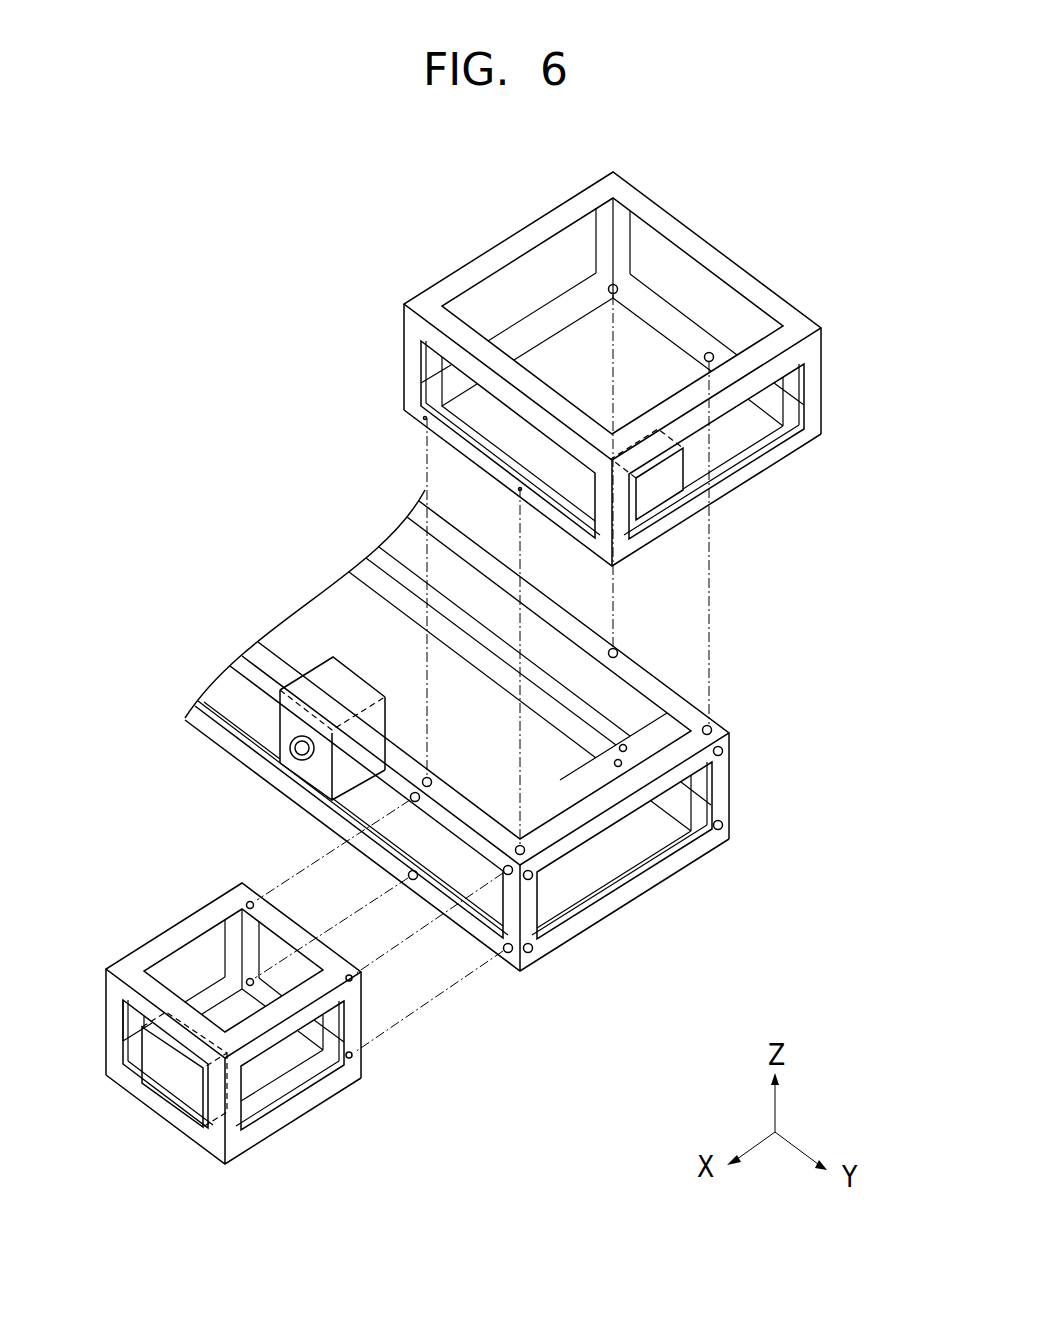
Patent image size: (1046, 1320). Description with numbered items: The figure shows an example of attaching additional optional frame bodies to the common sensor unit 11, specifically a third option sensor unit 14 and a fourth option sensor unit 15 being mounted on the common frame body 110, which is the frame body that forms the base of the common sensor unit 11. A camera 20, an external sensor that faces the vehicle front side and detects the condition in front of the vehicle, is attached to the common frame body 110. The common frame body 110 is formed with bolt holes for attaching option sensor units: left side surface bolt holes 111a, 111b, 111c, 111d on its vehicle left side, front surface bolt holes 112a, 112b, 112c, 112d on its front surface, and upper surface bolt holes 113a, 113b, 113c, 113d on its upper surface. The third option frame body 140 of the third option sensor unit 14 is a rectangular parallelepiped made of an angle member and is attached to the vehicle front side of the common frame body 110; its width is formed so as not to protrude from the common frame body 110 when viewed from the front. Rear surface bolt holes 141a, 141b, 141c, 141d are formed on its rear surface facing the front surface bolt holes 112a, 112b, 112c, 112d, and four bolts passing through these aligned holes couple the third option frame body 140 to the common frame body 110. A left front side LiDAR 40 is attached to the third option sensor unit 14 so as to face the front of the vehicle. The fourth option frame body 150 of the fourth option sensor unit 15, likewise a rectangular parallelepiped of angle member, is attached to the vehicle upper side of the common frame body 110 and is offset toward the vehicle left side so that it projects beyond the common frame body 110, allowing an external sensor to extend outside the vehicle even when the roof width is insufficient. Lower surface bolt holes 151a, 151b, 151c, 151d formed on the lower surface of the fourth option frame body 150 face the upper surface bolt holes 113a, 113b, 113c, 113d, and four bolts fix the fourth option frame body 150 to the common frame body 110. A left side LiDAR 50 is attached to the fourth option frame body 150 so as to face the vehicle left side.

The common sensor unit 11 is at (517, 766).
The third option sensor unit 14 is at (265, 990).
The fourth option sensor unit 15 is at (561, 367).
The camera 20 is at (300, 772).
The left front side LiDAR 40 is at (180, 1088).
The left side LiDAR 50 is at (676, 495).
The common frame body 110 is at (690, 700).
The left side surface bolt hole 111a is at (529, 870).
The left side surface bolt hole 111b is at (529, 953).
The left side surface bolt hole 111c is at (723, 752).
The left side surface bolt hole 111d is at (718, 830).
The front surface bolt hole 112a is at (505, 875).
The front surface bolt hole 112b is at (508, 953).
The front surface bolt hole 112c is at (411, 798).
The front surface bolt hole 112d is at (408, 876).
The upper surface bolt hole 113a is at (518, 845).
The upper surface bolt hole 113b is at (428, 777).
The upper surface bolt hole 113c is at (710, 724).
The upper surface bolt hole 113d is at (615, 648).
The third option frame body 140 is at (180, 934).
The rear surface bolt hole 141a is at (352, 981).
The rear surface bolt hole 141b is at (353, 1058).
The rear surface bolt hole 141c is at (248, 901).
The rear surface bolt hole 141d is at (247, 980).
The fourth option frame body 150 is at (676, 236).
The lower surface bolt hole 151a is at (522, 492).
The lower surface bolt hole 151b is at (423, 418).
The lower surface bolt hole 151c is at (611, 283).
The lower surface bolt hole 151d is at (711, 352).